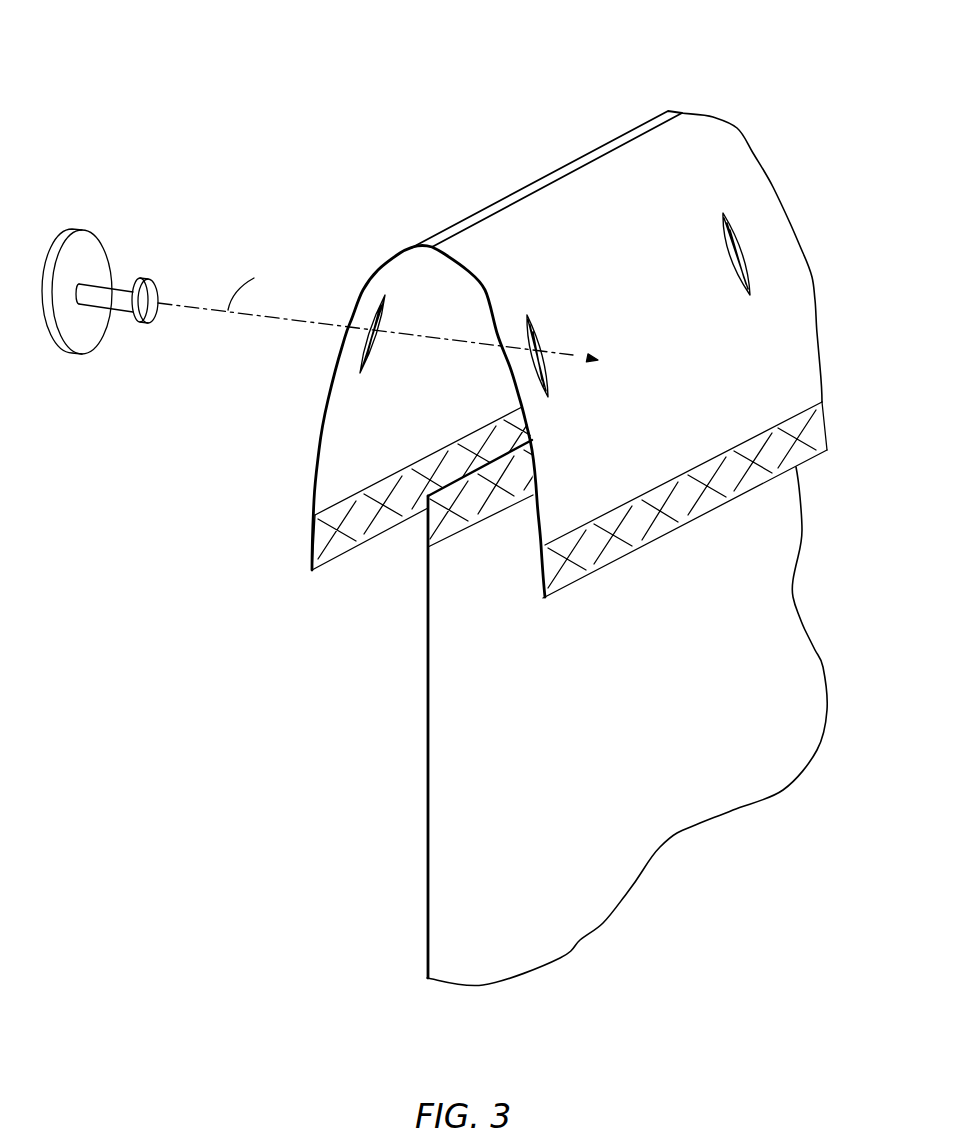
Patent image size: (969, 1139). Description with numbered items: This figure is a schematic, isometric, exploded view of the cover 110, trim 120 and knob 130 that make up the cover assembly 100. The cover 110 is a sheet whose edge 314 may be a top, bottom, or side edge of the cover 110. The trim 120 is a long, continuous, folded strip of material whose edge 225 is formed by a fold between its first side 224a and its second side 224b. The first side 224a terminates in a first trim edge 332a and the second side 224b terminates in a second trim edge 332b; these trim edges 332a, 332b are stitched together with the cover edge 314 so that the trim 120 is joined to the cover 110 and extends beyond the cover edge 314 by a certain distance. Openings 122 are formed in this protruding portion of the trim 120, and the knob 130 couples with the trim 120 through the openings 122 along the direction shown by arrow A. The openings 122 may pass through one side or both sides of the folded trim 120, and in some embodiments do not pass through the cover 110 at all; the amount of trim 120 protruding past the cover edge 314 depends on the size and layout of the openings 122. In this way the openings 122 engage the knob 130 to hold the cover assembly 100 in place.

The cover assembly 100 is at (250, 72).
The cover 110 is at (463, 688).
The trim 120 is at (713, 145).
The openings 122 is at (723, 242).
The knob 130 is at (90, 253).
The first side 224a is at (768, 363).
The second side 224b is at (323, 402).
The edge (fold) 225 is at (630, 133).
The cover edge 314 is at (452, 527).
The first trim edge 332a is at (707, 502).
The second trim edge 332b is at (308, 537).